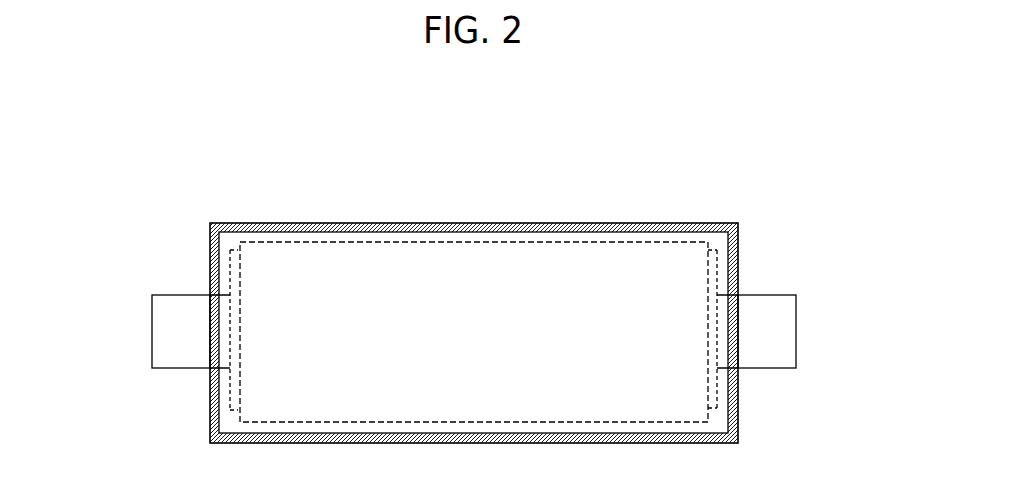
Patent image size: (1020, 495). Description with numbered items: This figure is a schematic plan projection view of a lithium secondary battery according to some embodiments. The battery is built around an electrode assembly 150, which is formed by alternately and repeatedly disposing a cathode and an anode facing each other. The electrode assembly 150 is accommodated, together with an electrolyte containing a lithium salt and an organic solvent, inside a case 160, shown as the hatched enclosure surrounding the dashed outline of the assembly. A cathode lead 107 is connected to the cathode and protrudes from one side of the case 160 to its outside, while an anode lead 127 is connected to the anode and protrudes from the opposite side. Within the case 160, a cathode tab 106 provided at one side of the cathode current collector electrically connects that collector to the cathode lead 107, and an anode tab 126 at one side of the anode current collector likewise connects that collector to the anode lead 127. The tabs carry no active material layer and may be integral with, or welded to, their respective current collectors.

The case 160 is at (528, 223).
The electrode assembly 150 is at (632, 241).
The cathode lead 107 is at (160, 331).
The cathode tab 106 is at (236, 399).
The anode lead 127 is at (787, 332).
The anode tab 126 is at (716, 398).